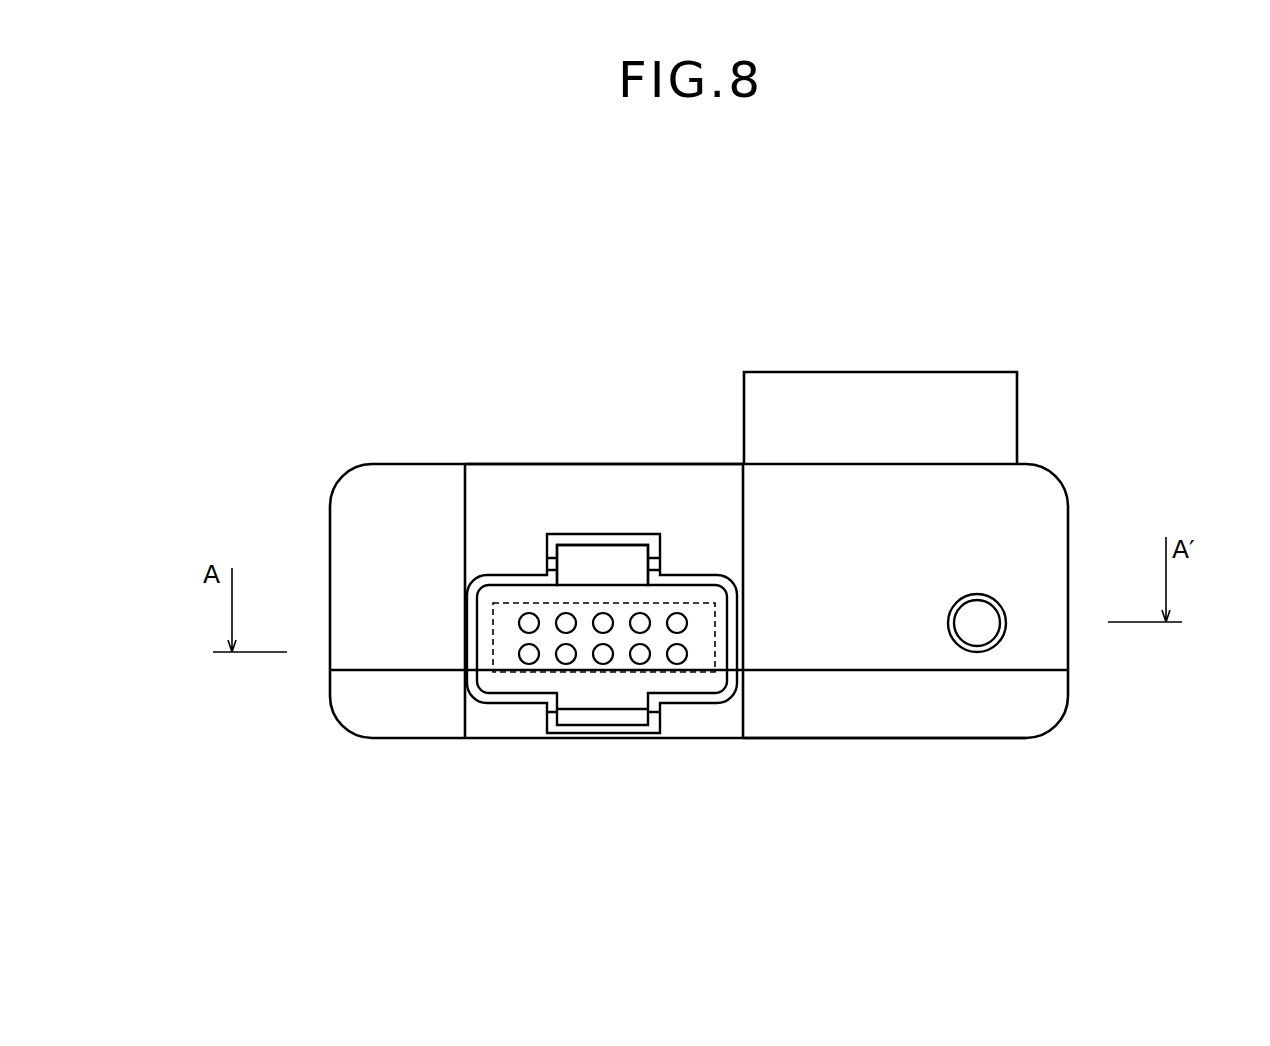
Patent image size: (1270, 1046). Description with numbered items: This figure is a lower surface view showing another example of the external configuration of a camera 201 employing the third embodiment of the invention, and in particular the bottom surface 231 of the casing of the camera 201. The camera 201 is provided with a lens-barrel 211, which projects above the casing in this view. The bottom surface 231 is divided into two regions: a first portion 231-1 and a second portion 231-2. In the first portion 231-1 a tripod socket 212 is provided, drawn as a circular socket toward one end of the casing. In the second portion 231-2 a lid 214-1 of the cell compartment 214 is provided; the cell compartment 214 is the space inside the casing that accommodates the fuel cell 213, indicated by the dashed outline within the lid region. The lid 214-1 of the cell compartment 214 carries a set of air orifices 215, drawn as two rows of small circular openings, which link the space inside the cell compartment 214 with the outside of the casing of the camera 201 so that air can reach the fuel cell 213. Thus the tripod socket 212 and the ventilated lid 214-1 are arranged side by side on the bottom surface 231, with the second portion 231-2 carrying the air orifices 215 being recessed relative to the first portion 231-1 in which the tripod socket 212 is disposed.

The camera 201 is at (920, 768).
The lens-barrel 211 is at (990, 424).
The tripod socket 212 is at (1007, 630).
The fuel cell 213 is at (690, 672).
The cell compartment 214 is at (635, 543).
The lid 214-1 is at (572, 568).
The air orifices 215 is at (527, 665).
The bottom surface 231 is at (373, 570).
The first portion 231-1 is at (1033, 535).
The second portion 231-2 is at (493, 488).